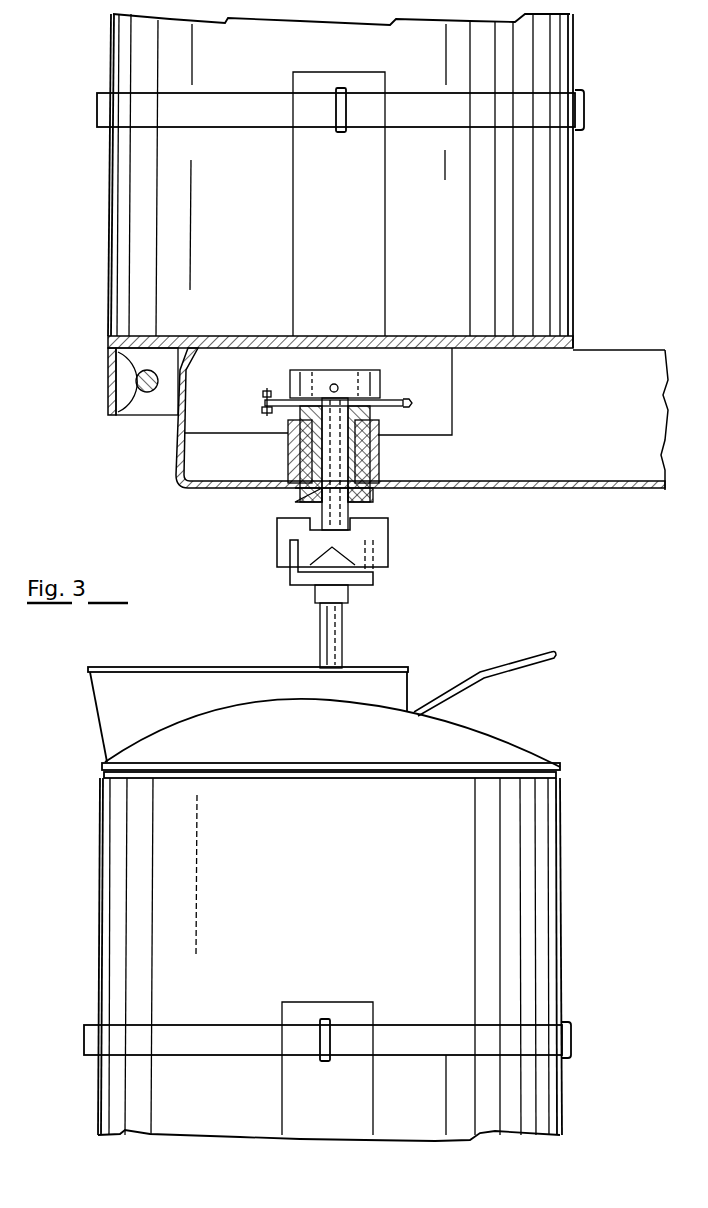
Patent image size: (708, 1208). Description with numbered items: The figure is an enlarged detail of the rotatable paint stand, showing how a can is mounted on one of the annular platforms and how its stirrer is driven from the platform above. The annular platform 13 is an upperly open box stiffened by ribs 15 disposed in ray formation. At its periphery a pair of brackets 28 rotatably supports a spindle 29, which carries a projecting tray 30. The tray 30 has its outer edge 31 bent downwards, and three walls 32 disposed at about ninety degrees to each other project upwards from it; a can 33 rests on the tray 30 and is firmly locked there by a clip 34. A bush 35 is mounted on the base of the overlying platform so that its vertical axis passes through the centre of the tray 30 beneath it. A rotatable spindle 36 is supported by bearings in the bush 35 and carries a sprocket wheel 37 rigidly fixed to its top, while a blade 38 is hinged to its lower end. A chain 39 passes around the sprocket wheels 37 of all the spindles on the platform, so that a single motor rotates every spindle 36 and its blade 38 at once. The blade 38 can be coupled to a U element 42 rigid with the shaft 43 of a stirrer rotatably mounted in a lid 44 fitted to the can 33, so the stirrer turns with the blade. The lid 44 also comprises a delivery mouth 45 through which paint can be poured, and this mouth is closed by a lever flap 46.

The annular platform 13 is at (508, 490).
The ribs 15 is at (585, 455).
The brackets 28 is at (157, 415).
The spindles 29 is at (138, 388).
The tray 30 is at (438, 340).
The outer edge 31 is at (108, 362).
The walls 32 is at (360, 209).
The can 33 is at (130, 237).
The clip 34 is at (115, 107).
The bush 35 is at (288, 453).
The rotatable spindle 36 is at (355, 488).
The sprocket wheel 37 is at (355, 400).
The blade 38 is at (278, 532).
The chain 39 is at (265, 392).
The U element 42 is at (290, 578).
The shaft 43 is at (338, 634).
The lid 44 is at (445, 735).
The delivery mouth 45 is at (125, 710).
The lever flap 46 is at (500, 670).